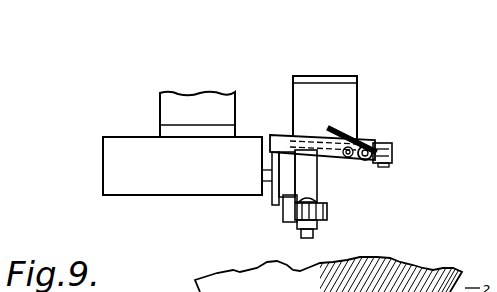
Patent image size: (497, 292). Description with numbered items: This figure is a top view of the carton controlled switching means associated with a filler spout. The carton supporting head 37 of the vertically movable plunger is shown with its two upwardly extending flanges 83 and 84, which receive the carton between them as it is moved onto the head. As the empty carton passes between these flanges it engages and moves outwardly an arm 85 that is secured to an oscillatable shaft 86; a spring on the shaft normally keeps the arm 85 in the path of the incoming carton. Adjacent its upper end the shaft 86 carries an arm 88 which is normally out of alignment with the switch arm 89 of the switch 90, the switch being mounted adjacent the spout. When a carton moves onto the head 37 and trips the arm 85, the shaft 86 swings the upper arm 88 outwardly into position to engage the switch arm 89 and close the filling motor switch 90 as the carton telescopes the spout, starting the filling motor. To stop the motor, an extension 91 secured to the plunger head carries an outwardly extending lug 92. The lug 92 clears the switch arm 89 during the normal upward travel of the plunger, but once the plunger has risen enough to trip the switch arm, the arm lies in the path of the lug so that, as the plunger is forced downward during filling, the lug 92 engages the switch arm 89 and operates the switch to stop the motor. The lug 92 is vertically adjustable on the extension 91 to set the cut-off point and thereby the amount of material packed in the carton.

The carton supporting head 37 is at (360, 92).
The upwardly extending flange 83 is at (312, 132).
The upwardly extending flange 84 is at (331, 76).
The arm 85 is at (330, 128).
The oscillatable shaft 86 is at (360, 166).
The arm 88 is at (334, 154).
The switch arm 89 is at (274, 197).
The switch 90 is at (183, 181).
The extension 91 is at (318, 229).
The lug 92 is at (291, 209).